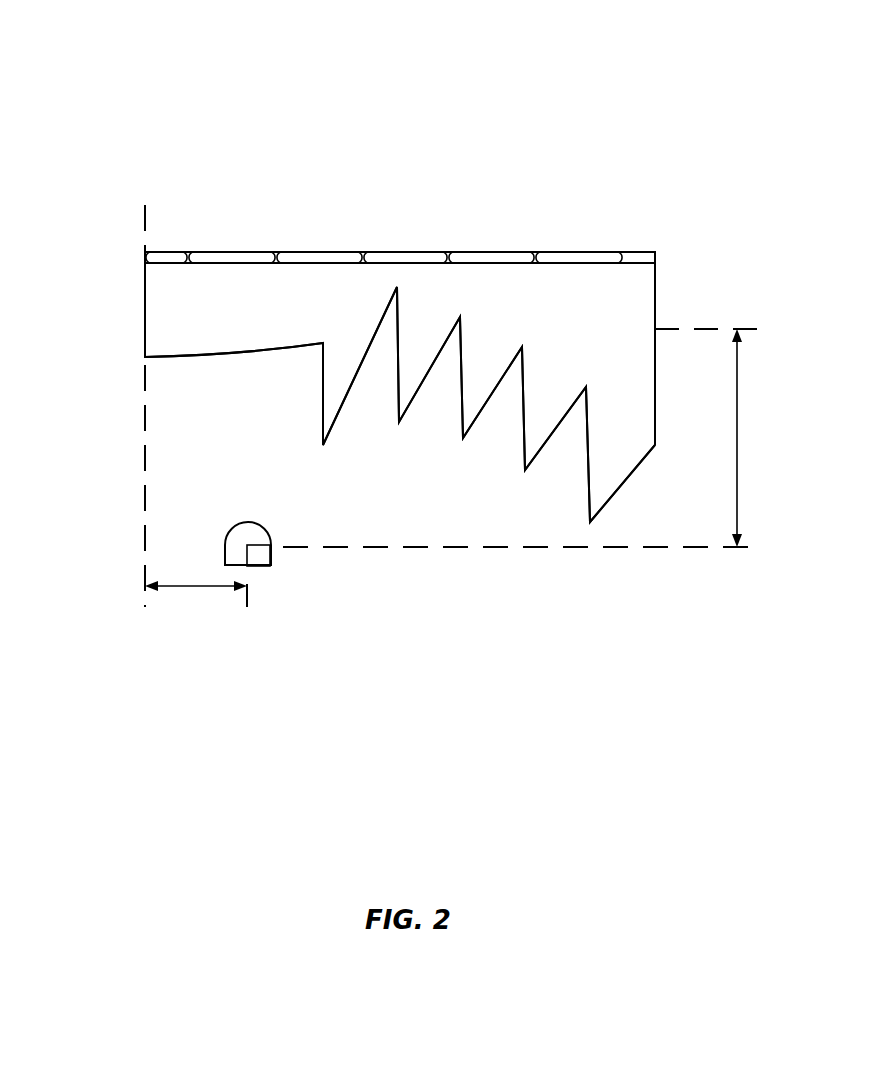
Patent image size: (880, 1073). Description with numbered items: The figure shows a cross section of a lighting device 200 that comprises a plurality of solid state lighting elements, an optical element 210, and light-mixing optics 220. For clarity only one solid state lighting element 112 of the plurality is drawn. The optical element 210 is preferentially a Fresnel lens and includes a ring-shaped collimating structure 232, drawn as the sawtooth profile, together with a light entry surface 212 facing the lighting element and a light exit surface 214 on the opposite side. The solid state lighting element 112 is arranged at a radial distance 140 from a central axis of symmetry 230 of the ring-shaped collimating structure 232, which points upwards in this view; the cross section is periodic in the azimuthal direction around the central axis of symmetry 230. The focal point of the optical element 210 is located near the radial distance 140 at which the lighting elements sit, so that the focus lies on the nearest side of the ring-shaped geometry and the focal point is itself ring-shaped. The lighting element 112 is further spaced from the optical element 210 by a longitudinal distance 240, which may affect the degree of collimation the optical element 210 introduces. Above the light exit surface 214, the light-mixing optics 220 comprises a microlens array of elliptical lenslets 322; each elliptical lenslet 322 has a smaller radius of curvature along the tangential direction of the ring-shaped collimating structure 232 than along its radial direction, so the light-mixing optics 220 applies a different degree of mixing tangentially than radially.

The lighting device 200 is at (140, 164).
The optical element 210 is at (617, 320).
The light entry surface 212 is at (320, 362).
The light exit surface 214 is at (640, 263).
The light-mixing optics 220 is at (661, 225).
The central axis of symmetry 230 is at (145, 458).
The ring-shaped collimating structure 232 is at (438, 424).
The longitudinal distance 240 is at (733, 392).
The elliptical lenslet 322 is at (397, 252).
The solid state lighting element 112 is at (271, 531).
The radial distance 140 is at (182, 588).